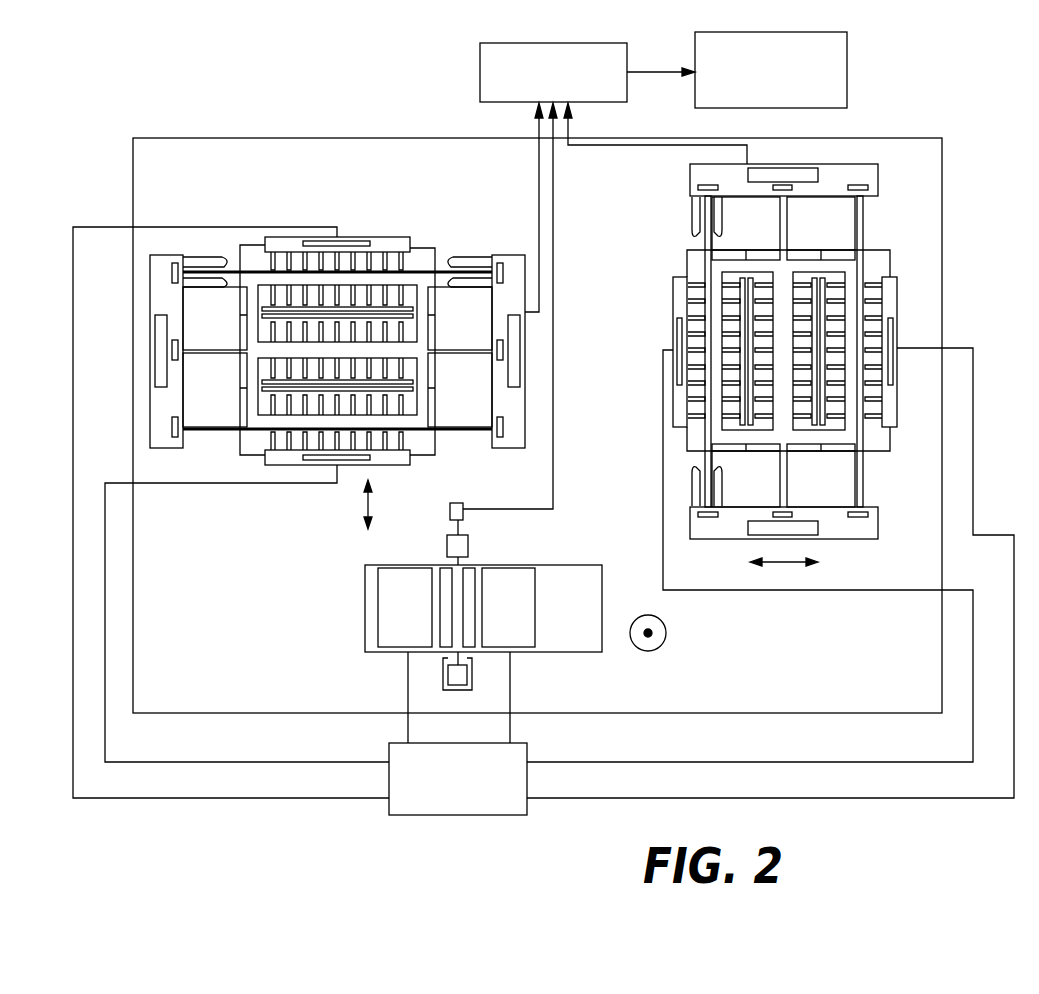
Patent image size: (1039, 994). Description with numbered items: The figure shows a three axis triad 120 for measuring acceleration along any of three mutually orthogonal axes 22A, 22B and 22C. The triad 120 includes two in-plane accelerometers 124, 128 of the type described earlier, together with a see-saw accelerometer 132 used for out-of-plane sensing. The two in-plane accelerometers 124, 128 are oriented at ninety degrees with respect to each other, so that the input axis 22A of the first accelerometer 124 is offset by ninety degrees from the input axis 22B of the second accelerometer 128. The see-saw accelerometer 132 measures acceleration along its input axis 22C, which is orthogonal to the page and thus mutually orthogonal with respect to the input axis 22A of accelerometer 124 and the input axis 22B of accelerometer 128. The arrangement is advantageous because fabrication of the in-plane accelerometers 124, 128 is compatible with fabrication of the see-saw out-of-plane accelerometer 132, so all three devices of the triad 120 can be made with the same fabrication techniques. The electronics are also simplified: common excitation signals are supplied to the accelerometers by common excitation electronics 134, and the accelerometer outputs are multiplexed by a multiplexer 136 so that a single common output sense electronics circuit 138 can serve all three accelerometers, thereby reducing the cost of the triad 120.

The three axis triad 120 is at (257, 58).
The in-plane accelerometer 124 is at (365, 219).
The in-plane accelerometer 128 is at (909, 266).
The see-saw accelerometer 132 is at (497, 553).
The common excitation electronics 134 is at (527, 743).
The multiplexer 136 is at (563, 43).
The common output sense electronics circuit 138 is at (847, 60).
The input axis 22A is at (368, 500).
The input axis 22B is at (783, 562).
The input axis 22C is at (650, 635).